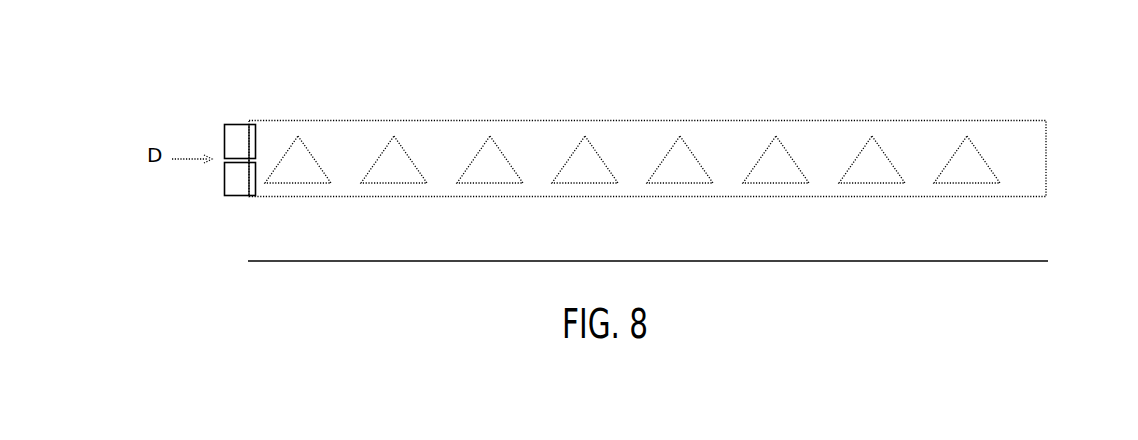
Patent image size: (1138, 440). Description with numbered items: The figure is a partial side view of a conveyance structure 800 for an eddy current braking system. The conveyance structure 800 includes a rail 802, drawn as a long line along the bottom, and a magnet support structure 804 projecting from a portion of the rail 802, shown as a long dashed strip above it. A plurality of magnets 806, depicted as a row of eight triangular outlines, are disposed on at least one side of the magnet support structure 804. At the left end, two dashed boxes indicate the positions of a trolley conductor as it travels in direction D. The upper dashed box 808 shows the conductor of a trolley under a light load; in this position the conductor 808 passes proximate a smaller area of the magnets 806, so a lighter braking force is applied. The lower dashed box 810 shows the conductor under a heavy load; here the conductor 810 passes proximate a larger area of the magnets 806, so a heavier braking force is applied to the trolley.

The conveyance structure 800 is at (1064, 81).
The rail 802 is at (1003, 233).
The magnet support structure 804 is at (1022, 164).
The magnets 806 is at (489, 161).
The conductor 808 is at (242, 132).
The conductor 810 is at (242, 182).